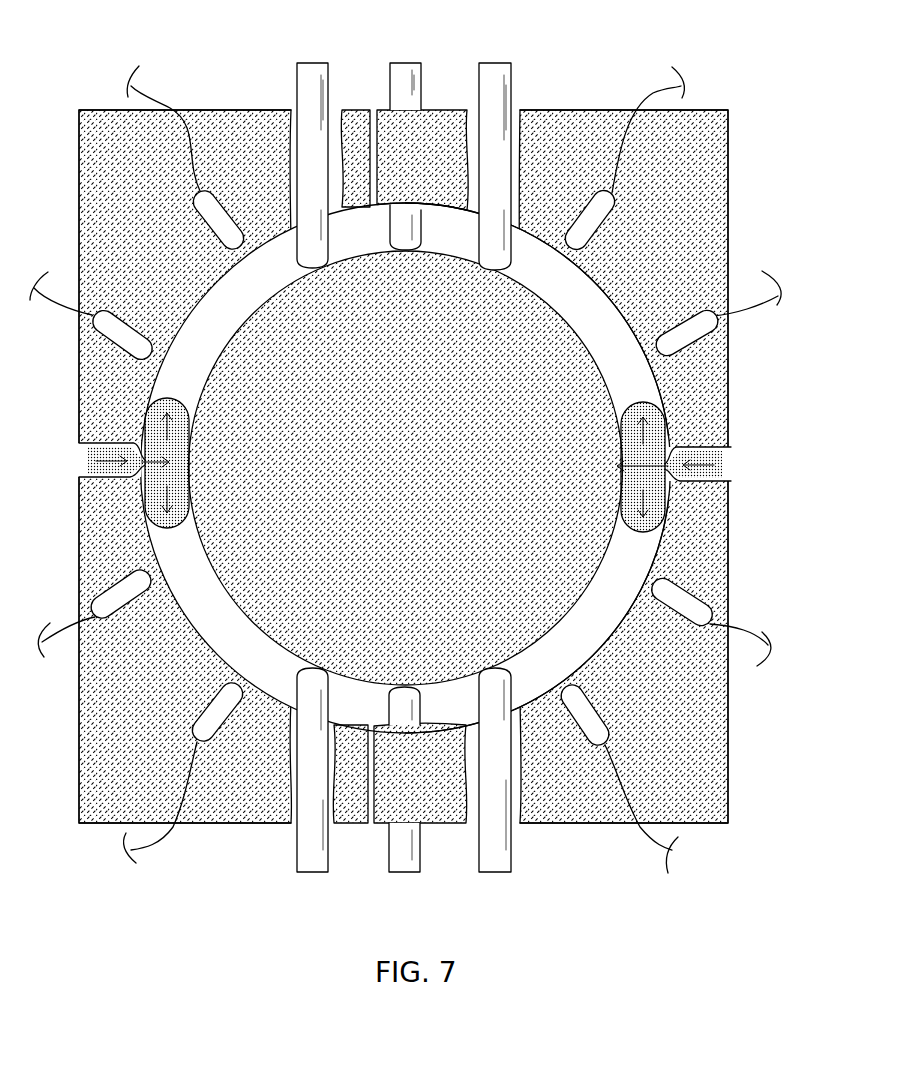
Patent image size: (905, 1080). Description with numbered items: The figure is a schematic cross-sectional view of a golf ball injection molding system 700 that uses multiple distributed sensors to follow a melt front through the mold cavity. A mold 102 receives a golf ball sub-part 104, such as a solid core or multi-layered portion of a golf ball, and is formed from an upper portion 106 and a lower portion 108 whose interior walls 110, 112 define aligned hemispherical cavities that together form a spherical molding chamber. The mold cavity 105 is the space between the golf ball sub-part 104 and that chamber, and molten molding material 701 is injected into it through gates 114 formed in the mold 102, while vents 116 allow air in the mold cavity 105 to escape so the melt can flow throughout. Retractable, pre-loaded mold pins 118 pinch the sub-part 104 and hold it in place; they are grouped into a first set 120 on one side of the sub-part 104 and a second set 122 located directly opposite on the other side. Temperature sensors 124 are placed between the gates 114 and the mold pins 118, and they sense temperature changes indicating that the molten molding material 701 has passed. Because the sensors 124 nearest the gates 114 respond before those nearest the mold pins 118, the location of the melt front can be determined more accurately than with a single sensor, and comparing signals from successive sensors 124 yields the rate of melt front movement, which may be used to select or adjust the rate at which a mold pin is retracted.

The system 700 is at (140, 51).
The mold 102 is at (728, 717).
The golf ball sub-part 104 is at (540, 313).
The mold cavity 105 is at (222, 346).
The upper portion 106 is at (723, 345).
The lower portion 108 is at (718, 563).
The interior wall 110 is at (612, 311).
The interior wall 112 is at (631, 603).
The gates 114 is at (67, 456).
The vents 116 is at (373, 110).
The mold pins 118 is at (311, 63).
The first set of mold pins 120 is at (537, 70).
The second set of mold pins 122 is at (282, 875).
The temperature sensors 124 is at (208, 704).
The molten molding material 701 is at (642, 402).